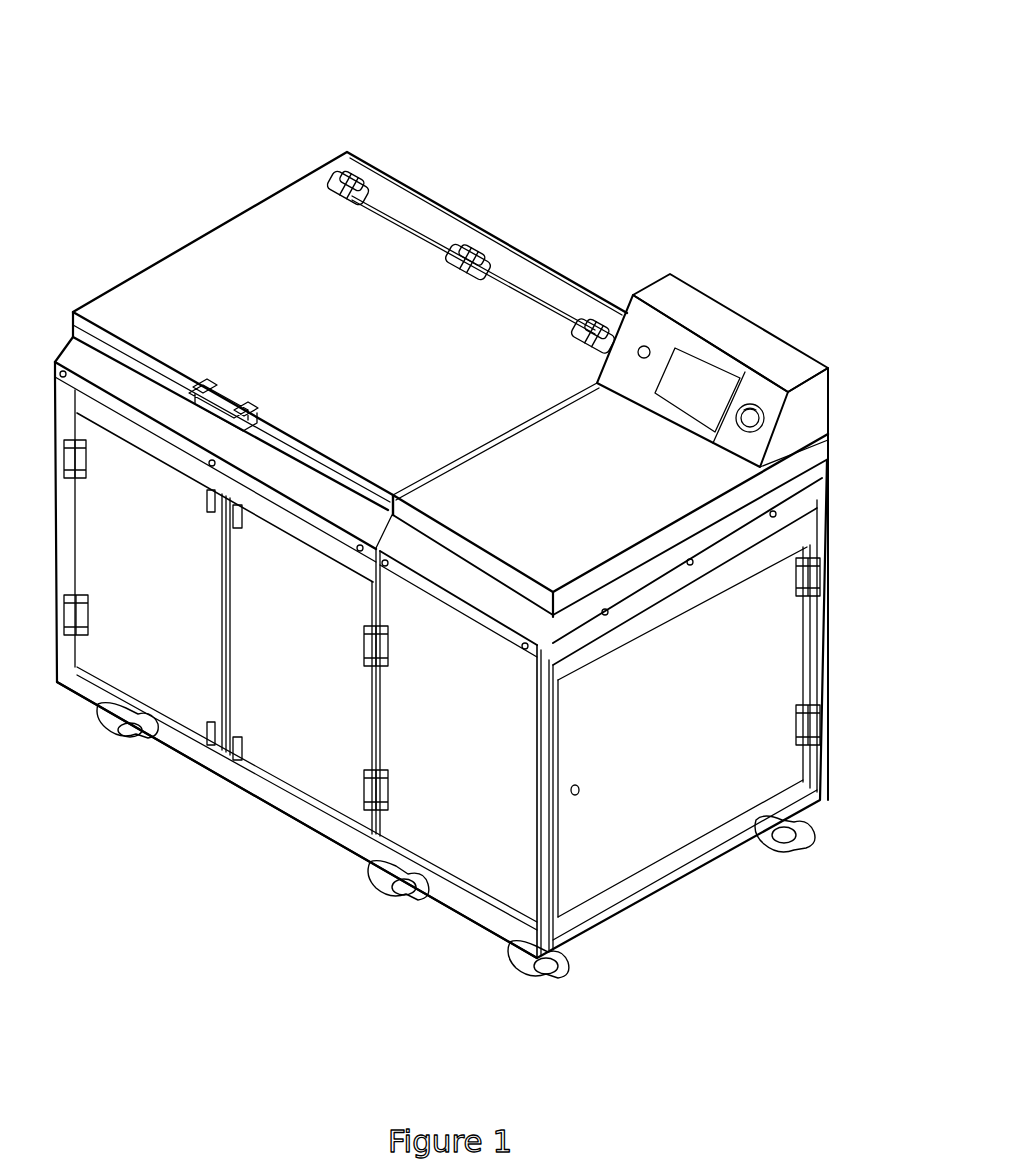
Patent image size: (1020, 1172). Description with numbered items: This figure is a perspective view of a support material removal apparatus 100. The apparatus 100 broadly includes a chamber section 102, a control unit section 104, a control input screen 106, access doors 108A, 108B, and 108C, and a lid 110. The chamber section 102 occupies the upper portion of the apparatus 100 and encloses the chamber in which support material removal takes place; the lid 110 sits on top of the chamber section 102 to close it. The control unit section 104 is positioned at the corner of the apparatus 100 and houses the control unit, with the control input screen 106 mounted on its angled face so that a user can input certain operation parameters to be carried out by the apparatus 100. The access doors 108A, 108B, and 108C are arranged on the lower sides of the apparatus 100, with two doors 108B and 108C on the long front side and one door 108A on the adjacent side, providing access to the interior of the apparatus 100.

The support material removal apparatus 100 is at (524, 122).
The chamber section 102 is at (524, 211).
The control unit section 104 is at (776, 302).
The control input screen 106 is at (703, 348).
The access door 108A is at (672, 807).
The access door 108B is at (268, 716).
The access door 108C is at (147, 672).
The lid 110 is at (207, 254).